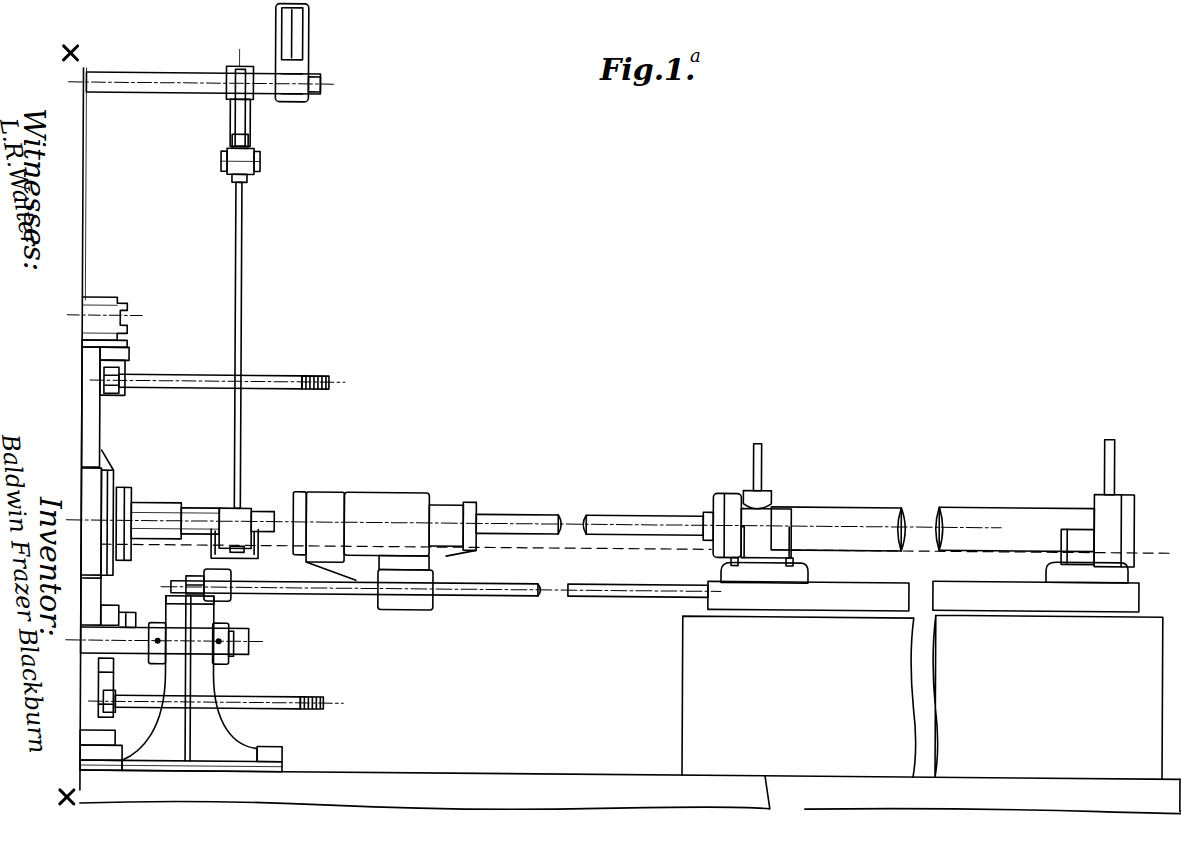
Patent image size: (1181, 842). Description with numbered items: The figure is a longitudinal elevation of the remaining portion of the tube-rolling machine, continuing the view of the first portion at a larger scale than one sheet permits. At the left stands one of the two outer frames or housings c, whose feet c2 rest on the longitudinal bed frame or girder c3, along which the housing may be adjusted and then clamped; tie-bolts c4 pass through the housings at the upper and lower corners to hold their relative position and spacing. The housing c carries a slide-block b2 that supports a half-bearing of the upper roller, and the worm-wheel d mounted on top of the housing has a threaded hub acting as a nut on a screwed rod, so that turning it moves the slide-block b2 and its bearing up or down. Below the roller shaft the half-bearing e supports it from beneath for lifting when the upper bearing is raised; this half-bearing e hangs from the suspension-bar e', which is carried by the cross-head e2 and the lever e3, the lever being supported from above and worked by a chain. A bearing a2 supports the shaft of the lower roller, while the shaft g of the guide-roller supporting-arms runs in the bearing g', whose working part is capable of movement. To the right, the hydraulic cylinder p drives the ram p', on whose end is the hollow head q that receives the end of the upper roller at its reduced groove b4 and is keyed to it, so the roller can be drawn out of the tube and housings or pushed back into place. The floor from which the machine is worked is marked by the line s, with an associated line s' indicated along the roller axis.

The lever e3 is at (223, 90).
The cross-head e2 is at (257, 157).
The suspension-bars e' is at (257, 345).
The worm-wheels d is at (112, 312).
The outer frames or housings c is at (91, 410).
The tie-bolts c4 is at (300, 697).
The slide-blocks b2 is at (112, 486).
The reduced portion or groove b4 is at (190, 499).
The half-bearings e is at (242, 519).
The axis line s' is at (406, 552).
The floor line s is at (980, 542).
The head q is at (368, 500).
The ram p' is at (589, 510).
The hydraulic cylinder p is at (932, 518).
The shafts g is at (164, 643).
The bearings g' is at (202, 669).
The bearings a2 is at (106, 610).
The feet c2 is at (106, 740).
The longitudinal bed frame or girder c3 is at (88, 758).